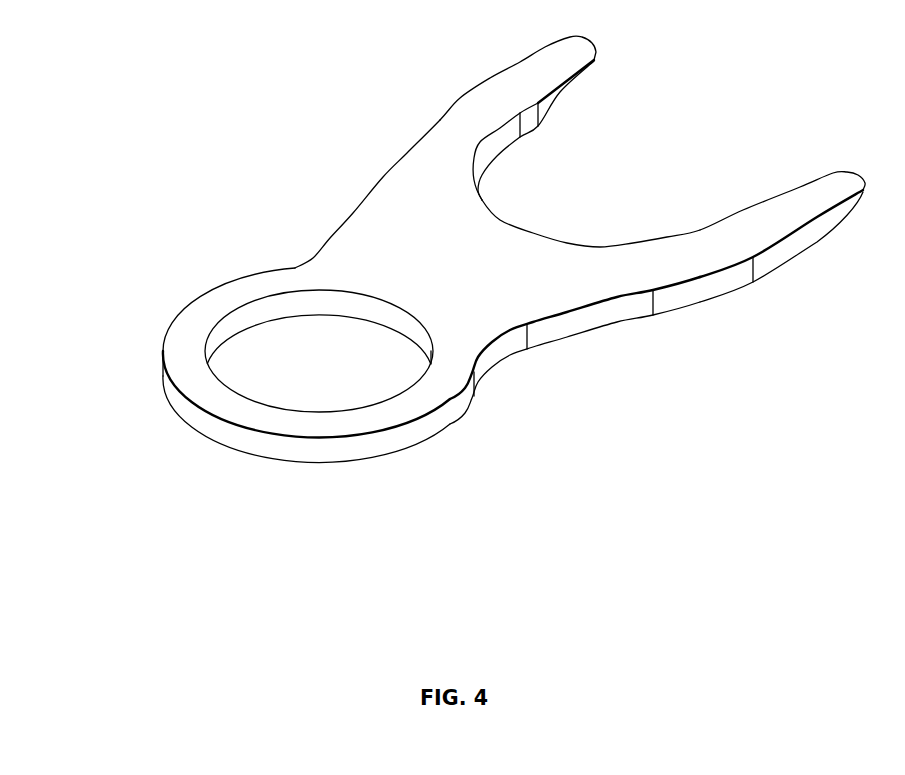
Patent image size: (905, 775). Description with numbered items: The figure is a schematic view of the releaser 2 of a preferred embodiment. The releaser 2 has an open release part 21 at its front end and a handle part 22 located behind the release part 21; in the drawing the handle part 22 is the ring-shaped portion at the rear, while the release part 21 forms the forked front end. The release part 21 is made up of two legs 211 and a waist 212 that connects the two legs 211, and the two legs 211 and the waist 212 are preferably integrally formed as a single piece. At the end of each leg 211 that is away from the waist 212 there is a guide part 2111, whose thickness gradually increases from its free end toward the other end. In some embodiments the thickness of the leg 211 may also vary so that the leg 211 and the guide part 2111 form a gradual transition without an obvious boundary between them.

The releaser 2 is at (446, 276).
The release part 21 is at (507, 230).
The legs 211 is at (488, 147).
The guide part 2111 is at (570, 93).
The waist 212 is at (472, 222).
The handle part 22 is at (192, 412).